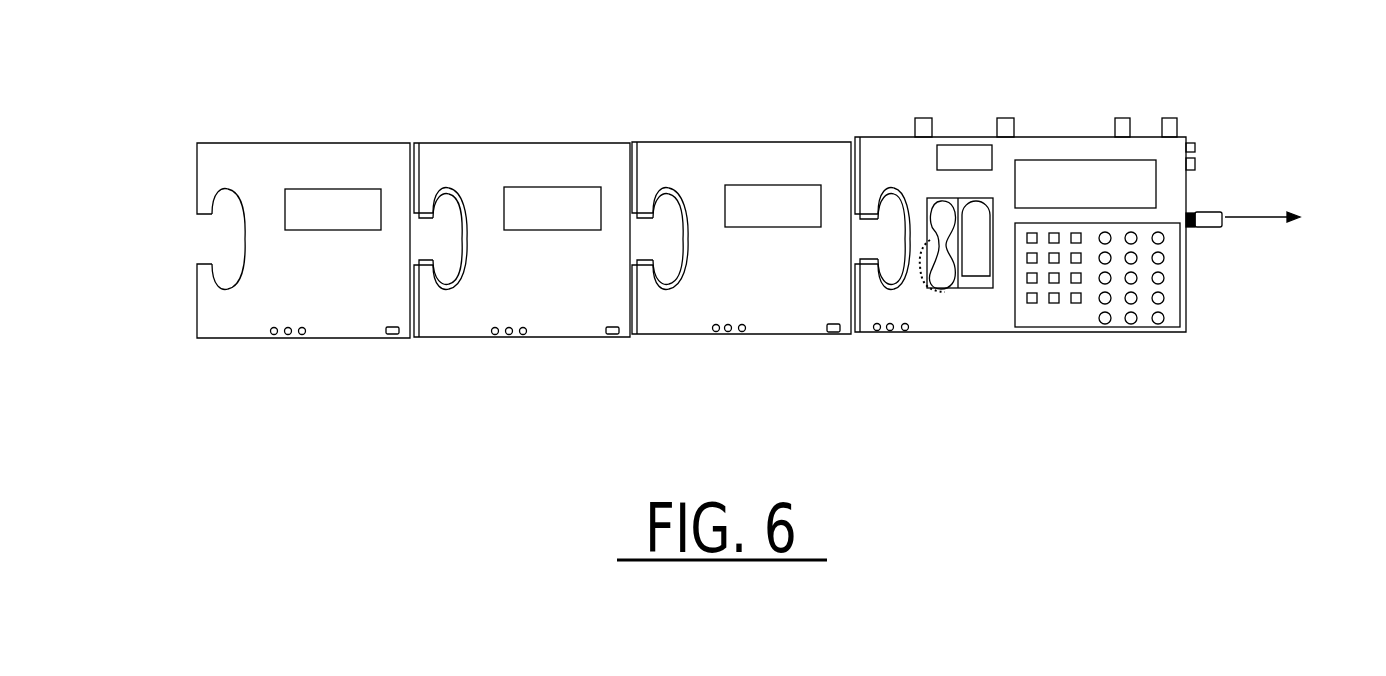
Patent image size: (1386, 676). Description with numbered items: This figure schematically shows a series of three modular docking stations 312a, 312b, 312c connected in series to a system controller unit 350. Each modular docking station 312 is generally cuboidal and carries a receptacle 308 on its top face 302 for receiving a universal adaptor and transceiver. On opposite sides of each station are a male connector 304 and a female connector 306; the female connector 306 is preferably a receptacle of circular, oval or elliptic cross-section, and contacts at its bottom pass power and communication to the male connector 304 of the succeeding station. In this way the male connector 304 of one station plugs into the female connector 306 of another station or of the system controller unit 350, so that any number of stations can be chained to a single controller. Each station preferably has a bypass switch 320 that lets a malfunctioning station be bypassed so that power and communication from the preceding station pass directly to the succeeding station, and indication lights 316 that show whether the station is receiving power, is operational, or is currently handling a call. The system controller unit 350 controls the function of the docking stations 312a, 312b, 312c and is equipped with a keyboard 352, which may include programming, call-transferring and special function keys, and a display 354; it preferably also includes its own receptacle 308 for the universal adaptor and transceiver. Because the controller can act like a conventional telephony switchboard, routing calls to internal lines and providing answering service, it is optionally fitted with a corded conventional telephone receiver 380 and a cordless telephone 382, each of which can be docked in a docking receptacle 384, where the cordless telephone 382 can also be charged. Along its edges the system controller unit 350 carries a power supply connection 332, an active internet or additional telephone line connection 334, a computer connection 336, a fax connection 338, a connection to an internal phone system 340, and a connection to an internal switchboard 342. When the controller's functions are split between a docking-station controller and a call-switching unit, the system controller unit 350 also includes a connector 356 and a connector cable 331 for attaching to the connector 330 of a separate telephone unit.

The top face 302 is at (235, 322).
The male connector 304 is at (443, 237).
The female connector 306 is at (225, 238).
The receptacle 308 is at (333, 215).
The modular docking station 312 is at (710, 102).
The modular docking station 312a is at (726, 135).
The modular docking station 312b is at (528, 135).
The modular docking station 312c is at (324, 135).
The indication lights 316 is at (716, 332).
The bypass switch 320 is at (833, 333).
The connector 330 is at (1287, 217).
The connector cable 331 is at (1208, 227).
The power supply connection 332 is at (923, 118).
The active internet or additional telephone line connection 334 is at (1006, 118).
The computer connection 336 is at (1125, 117).
The fax connection 338 is at (1170, 116).
The connection to an internal phone system 340 is at (1196, 146).
The connection to an internal switchboard 342 is at (1196, 164).
The system controller unit 350 is at (1027, 146).
The keyboard 352 is at (1090, 322).
The display 354 is at (1137, 191).
The connector 356 is at (1188, 228).
The conventional telephone receiver 380 is at (948, 273).
The cordless telephone 382 is at (980, 258).
The docking receptacle 384 is at (973, 283).